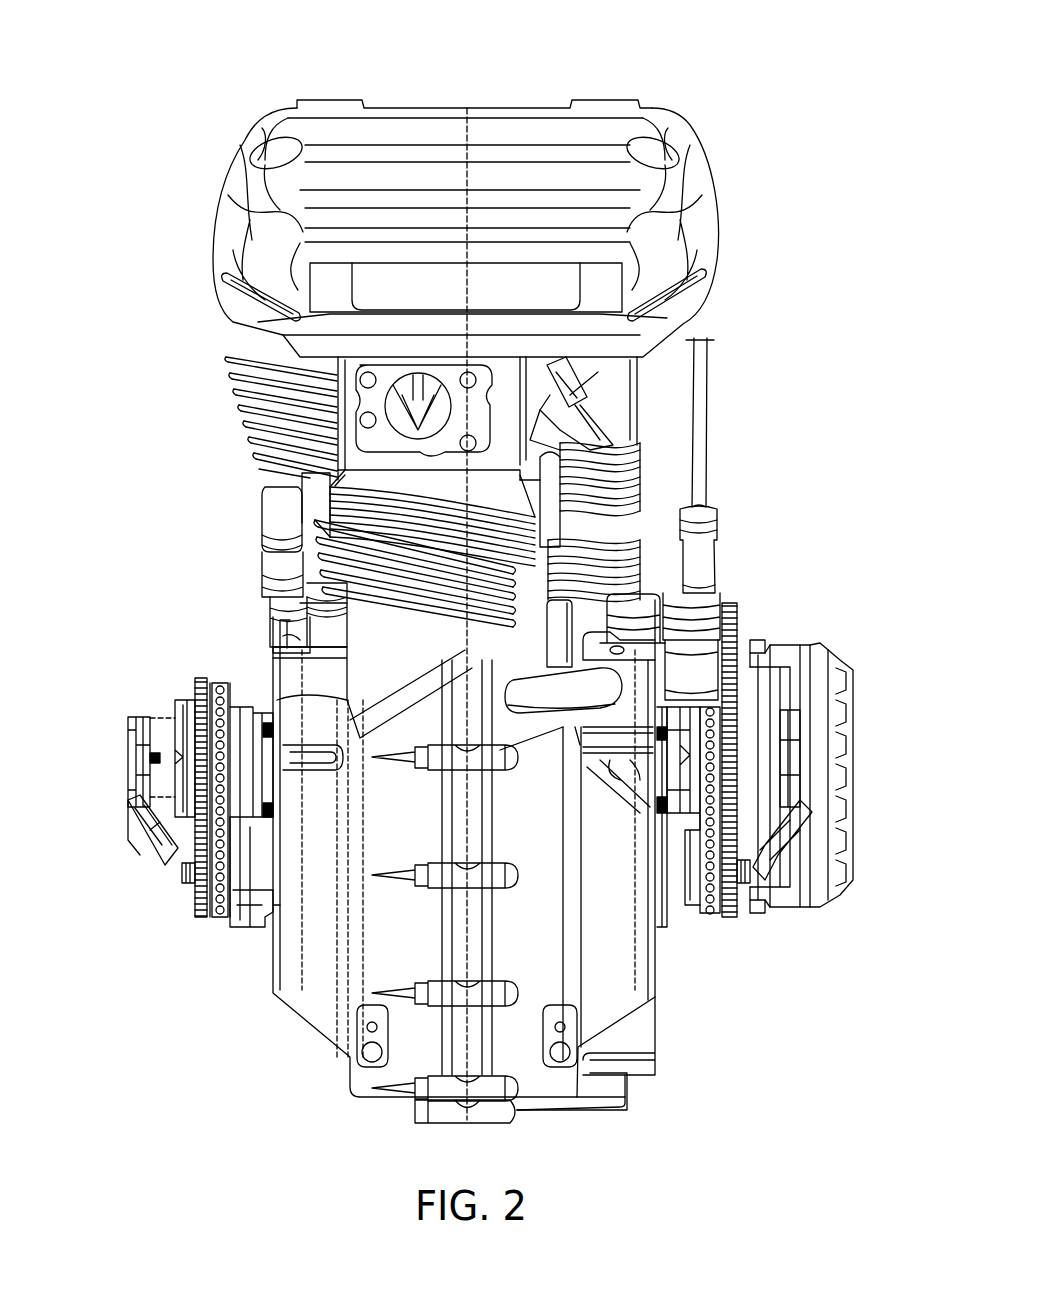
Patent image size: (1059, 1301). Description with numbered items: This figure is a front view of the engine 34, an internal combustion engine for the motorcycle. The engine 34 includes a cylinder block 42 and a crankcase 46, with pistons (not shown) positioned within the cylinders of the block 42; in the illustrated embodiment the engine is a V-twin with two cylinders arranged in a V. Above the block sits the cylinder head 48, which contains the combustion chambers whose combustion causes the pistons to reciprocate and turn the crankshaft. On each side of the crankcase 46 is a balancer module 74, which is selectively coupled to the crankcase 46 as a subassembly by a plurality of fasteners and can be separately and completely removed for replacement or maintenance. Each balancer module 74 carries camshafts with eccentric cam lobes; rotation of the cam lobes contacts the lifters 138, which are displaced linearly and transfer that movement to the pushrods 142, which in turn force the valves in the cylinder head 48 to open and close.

The engine 34 is at (680, 50).
The cylinder block 42 is at (146, 262).
The cylinder head 48 is at (230, 382).
The pushrods 142 is at (275, 472).
The lifters 138 is at (270, 578).
The crankcase 46 is at (250, 1083).
The balancer modules 74 is at (98, 738).